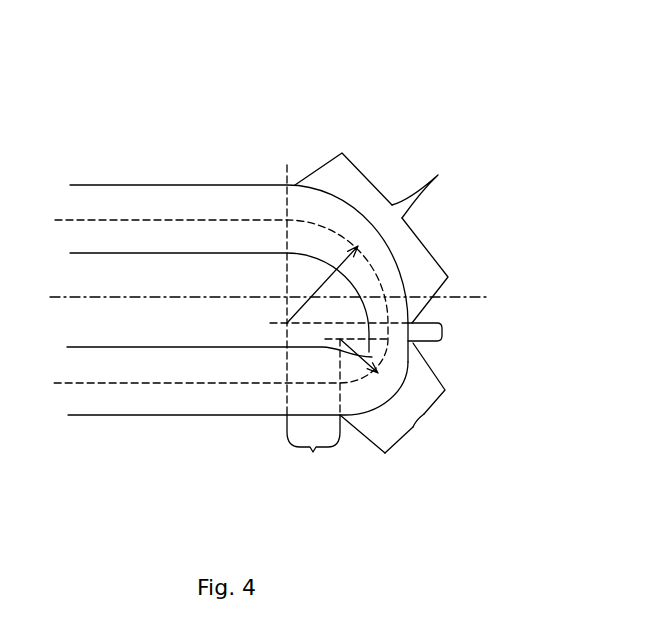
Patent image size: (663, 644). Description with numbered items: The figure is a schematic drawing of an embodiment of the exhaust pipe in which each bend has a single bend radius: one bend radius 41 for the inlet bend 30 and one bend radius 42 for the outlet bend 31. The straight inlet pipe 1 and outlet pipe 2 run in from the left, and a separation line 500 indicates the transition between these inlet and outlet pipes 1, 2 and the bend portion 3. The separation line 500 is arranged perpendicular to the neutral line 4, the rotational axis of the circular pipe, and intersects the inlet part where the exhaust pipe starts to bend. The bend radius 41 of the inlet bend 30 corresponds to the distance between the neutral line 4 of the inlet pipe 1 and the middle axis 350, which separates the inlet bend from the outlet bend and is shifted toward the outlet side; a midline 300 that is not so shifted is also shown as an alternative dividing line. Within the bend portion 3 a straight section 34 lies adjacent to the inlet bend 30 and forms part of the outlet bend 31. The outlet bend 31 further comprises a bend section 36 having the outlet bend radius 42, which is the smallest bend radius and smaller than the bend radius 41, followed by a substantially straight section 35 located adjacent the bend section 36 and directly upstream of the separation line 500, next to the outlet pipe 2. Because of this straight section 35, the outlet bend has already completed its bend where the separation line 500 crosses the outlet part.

The inlet pipe 1 is at (187, 207).
The outlet pipe 2 is at (218, 395).
The bend portion 3 is at (396, 295).
The neutral line 4 is at (129, 219).
The inlet bend 30 is at (438, 175).
The outlet bend 31 is at (382, 481).
The straight section 34 is at (442, 332).
The substantially straight section 35 is at (313, 452).
The bend section 36 is at (413, 427).
The inlet bend radius 41 is at (335, 279).
The outlet bend radius 42 is at (372, 357).
The midline 300 is at (140, 297).
The middle axis 350 is at (267, 323).
The separation line 500 is at (288, 165).